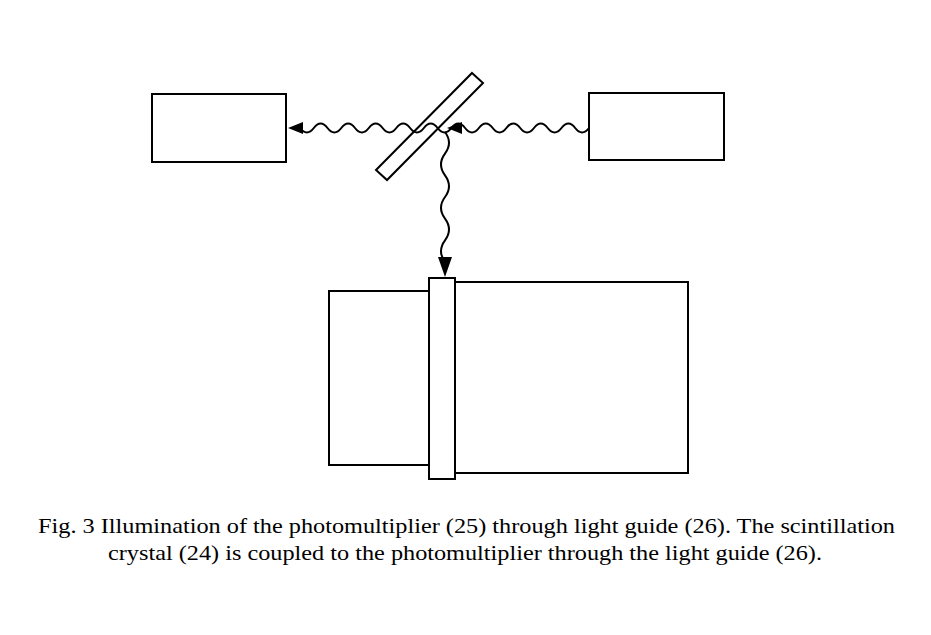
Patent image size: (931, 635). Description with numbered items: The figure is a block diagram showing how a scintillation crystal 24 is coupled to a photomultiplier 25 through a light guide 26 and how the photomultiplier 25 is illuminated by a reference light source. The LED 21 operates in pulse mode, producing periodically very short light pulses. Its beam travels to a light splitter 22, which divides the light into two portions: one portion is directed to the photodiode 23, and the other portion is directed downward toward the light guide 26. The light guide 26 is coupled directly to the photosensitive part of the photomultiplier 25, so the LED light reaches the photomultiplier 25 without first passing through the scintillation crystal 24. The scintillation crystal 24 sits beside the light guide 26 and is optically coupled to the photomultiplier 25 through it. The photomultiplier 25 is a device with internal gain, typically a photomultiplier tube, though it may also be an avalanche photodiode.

The LED 21 is at (632, 126).
The light splitter 22 is at (441, 104).
The photodiode 23 is at (238, 109).
The scintillation crystal 24 is at (365, 308).
The photomultiplier 25 is at (640, 369).
The light guide 26 is at (441, 321).